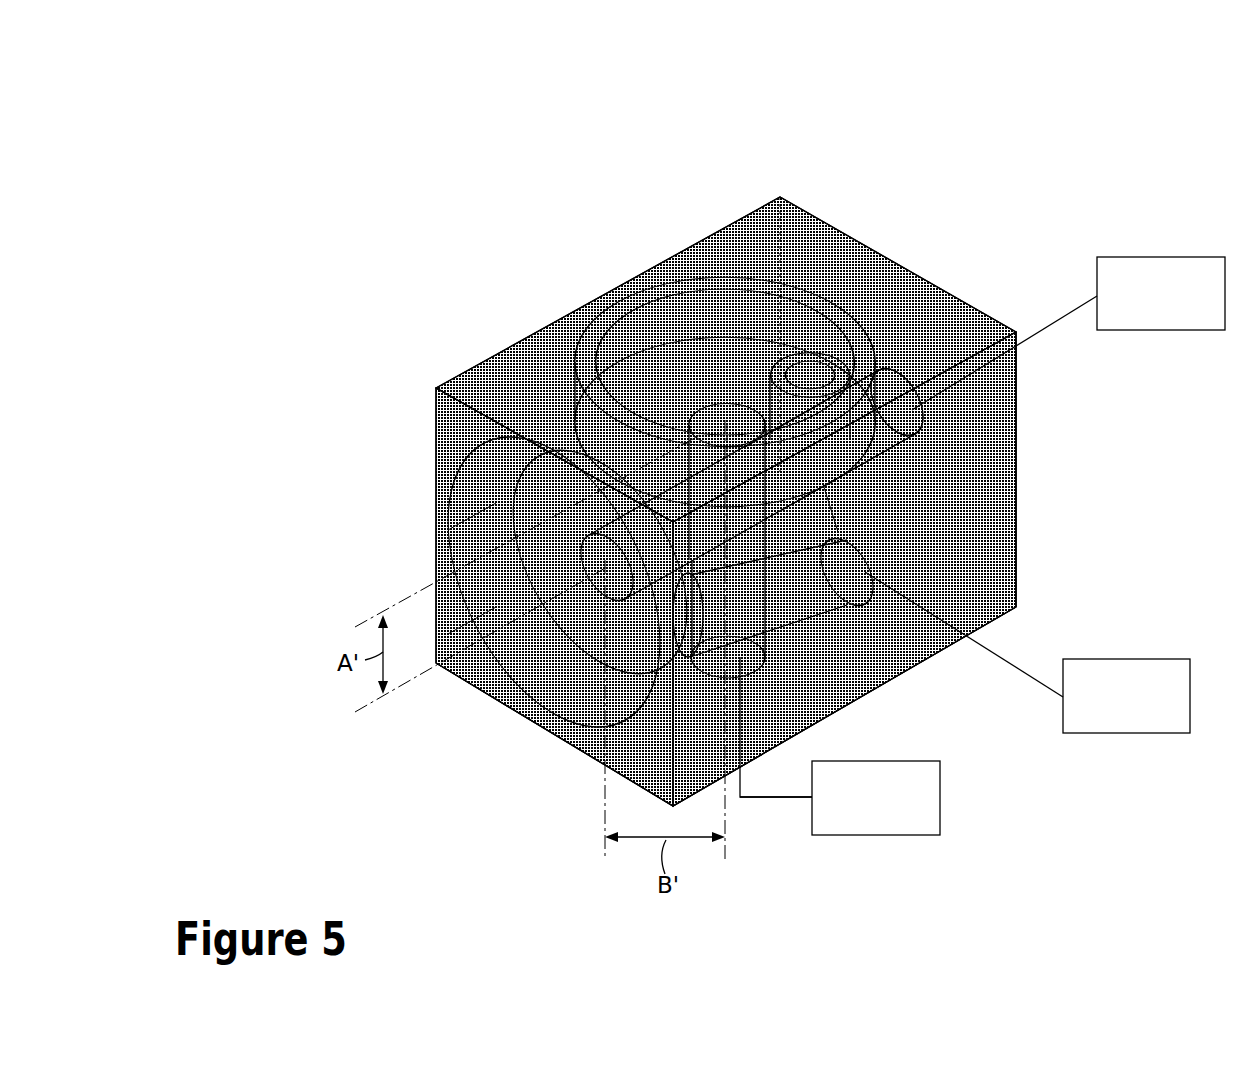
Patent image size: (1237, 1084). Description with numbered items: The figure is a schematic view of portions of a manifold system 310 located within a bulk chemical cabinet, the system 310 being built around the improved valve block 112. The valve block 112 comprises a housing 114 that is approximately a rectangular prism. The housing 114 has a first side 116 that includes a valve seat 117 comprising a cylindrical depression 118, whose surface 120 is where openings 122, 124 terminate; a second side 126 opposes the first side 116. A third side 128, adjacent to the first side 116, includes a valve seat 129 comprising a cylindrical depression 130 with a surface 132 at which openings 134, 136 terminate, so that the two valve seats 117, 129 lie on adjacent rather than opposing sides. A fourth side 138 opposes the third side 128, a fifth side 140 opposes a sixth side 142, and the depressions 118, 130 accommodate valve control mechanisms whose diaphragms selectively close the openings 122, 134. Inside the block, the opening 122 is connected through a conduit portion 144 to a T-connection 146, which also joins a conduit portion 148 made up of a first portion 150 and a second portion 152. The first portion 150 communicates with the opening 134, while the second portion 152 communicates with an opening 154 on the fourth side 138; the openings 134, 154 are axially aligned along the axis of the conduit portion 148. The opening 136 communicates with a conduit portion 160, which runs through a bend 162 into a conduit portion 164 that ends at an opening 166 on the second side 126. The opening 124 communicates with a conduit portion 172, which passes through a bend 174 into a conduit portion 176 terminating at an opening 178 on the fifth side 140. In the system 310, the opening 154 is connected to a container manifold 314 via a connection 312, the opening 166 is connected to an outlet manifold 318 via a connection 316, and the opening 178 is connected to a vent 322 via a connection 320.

The manifold system 310 is at (327, 180).
The valve block 112 is at (780, 197).
The housing 114 is at (807, 245).
The first side 116 is at (458, 668).
The valve seat 117 is at (560, 642).
The cylindrical depression 118 is at (553, 690).
The surface 120 is at (557, 615).
The opening 122 is at (612, 598).
The opening 124 is at (693, 663).
The second side 126 is at (1032, 418).
The third side 128 is at (540, 350).
The valve seat 129 is at (650, 334).
The cylindrical depression 130 is at (600, 348).
The surface 132 is at (683, 367).
The opening 134 is at (722, 400).
The opening 136 is at (823, 357).
The fourth side 138 is at (906, 692).
The fifth side 140 is at (995, 478).
The sixth side 142 is at (428, 452).
The conduit portion 144 is at (620, 523).
The T-connection 146 is at (703, 490).
The conduit portion 148 is at (740, 452).
The first portion 150 is at (743, 470).
The second portion 152 is at (747, 653).
The opening 154 is at (728, 657).
The conduit portion 160 is at (790, 393).
The bend 162 is at (823, 484).
The conduit portion 164 is at (915, 408).
The opening 166 is at (903, 373).
The conduit portion 172 is at (765, 607).
The bend 174 is at (830, 498).
The conduit portion 176 is at (838, 532).
The opening 178 is at (855, 575).
The connection 312 is at (780, 798).
The container manifold 314 is at (940, 800).
The connection 316 is at (1063, 315).
The outlet manifold 318 is at (1140, 257).
The connection 320 is at (1027, 674).
The vent 322 is at (1140, 733).